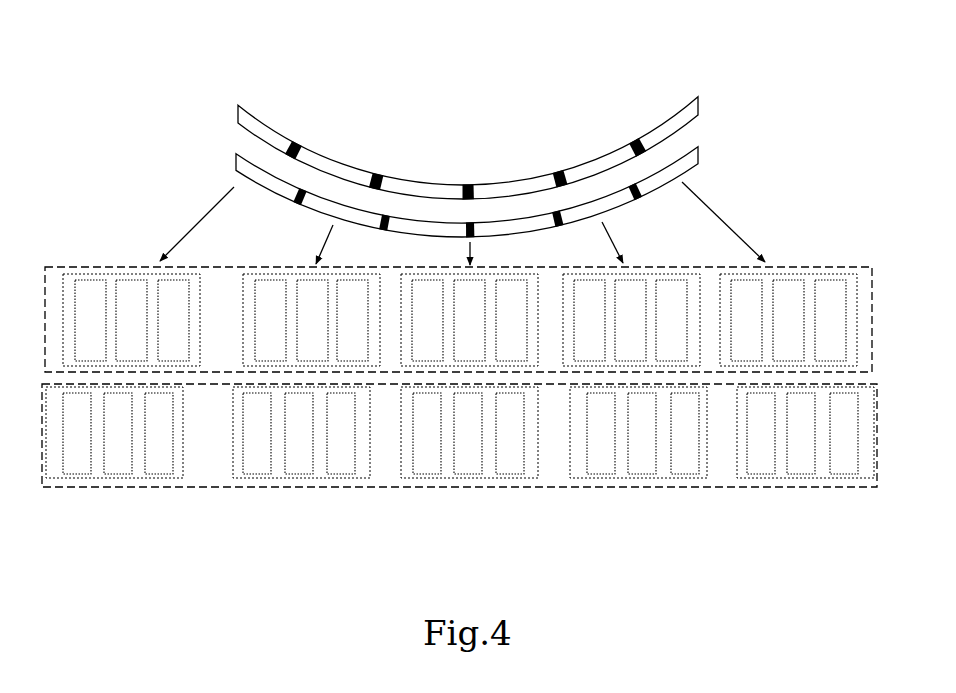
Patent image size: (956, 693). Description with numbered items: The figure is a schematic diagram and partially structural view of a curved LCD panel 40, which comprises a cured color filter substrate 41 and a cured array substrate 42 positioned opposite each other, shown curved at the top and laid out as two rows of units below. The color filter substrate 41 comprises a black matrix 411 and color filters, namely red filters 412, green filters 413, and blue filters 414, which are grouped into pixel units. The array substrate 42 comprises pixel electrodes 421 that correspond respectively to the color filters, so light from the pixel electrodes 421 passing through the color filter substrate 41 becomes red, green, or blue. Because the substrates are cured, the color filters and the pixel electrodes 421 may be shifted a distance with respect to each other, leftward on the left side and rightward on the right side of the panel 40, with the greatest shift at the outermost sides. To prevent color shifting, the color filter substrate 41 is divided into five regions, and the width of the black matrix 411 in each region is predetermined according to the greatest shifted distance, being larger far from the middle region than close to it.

The curved LCD panel 40 is at (240, 94).
The color filter substrate 41 is at (699, 99).
The array substrate 42 is at (699, 149).
The black matrix 411 is at (662, 460).
The red filters 412 is at (248, 459).
The green filters 413 is at (293, 459).
The blue filters 414 is at (336, 459).
The pixel electrodes 421 is at (112, 282).